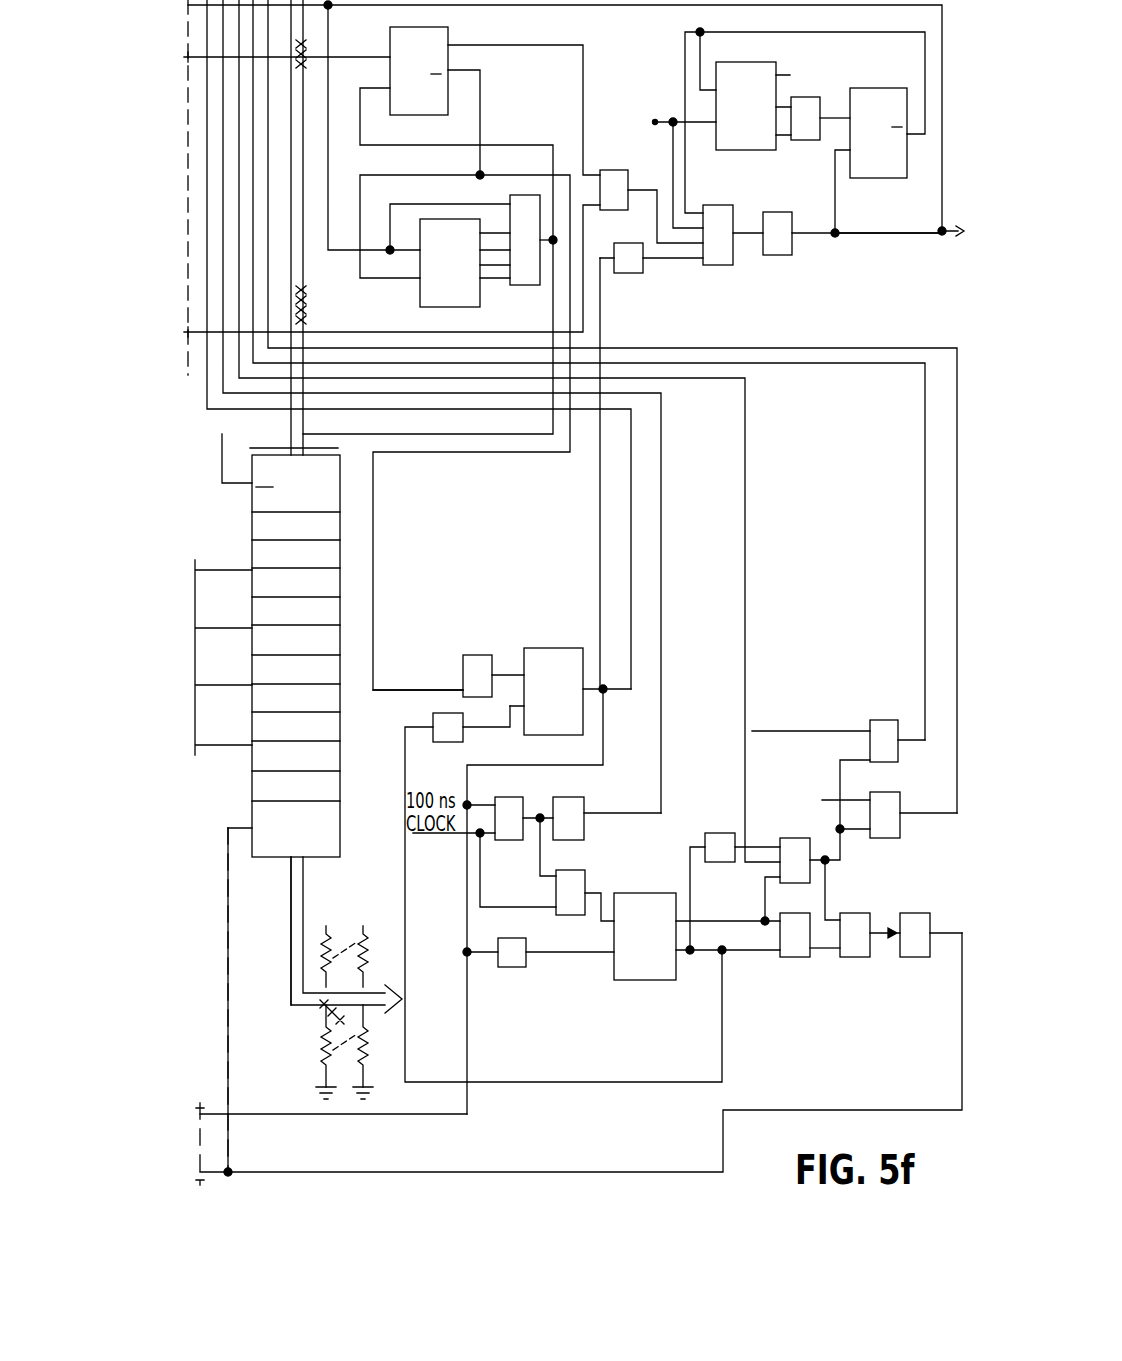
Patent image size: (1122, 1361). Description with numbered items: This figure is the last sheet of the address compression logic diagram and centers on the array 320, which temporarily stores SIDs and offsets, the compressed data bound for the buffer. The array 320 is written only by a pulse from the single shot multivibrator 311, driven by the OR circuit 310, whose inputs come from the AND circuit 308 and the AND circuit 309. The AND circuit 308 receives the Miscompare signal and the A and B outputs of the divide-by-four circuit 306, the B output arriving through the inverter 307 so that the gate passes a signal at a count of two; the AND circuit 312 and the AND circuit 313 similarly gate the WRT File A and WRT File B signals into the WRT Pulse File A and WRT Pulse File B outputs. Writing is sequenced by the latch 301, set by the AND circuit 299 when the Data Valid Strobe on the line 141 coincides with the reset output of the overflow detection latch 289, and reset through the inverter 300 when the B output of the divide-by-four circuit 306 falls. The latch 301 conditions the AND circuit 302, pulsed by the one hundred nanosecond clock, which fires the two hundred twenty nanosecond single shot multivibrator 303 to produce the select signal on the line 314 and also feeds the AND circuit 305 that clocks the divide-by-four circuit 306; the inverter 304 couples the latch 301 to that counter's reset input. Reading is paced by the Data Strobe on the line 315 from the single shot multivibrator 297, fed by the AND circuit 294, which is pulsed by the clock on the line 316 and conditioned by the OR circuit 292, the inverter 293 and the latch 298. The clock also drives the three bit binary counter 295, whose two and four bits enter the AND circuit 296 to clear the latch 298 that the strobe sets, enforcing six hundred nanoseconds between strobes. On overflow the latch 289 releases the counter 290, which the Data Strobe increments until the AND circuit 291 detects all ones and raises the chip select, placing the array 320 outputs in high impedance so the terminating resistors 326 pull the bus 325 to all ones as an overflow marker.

The line 141 is at (457, 660).
The latch 289 is at (448, 35).
The counter 290 is at (417, 293).
The AND circuit 291 is at (513, 287).
The OR circuit 292 is at (622, 169).
The inverter 293 is at (632, 274).
The AND circuit 294 is at (720, 266).
The 3 bit binary counter 295 is at (738, 62).
The AND circuit 296 is at (813, 97).
The single shot multivibrator 297 is at (782, 256).
The latch 298 is at (907, 91).
The AND circuit 299 is at (487, 659).
The inverter 300 is at (455, 744).
The latch 301 is at (572, 645).
The AND circuit 302 is at (519, 797).
The single shot multivibrator 303 is at (582, 797).
The inverter 304 is at (522, 944).
The AND circuit 305 is at (585, 873).
The divide by 4 circuit 306 is at (656, 982).
The inverter 307 is at (720, 864).
The AND circuit 308 is at (784, 839).
The AND circuit 309 is at (798, 958).
The OR circuit 310 is at (871, 910).
The single shot multivibrator 311 is at (933, 910).
The AND circuit 312 is at (900, 758).
The AND circuit 313 is at (891, 840).
The line 314 is at (643, 815).
The line 315 is at (890, 244).
The line 316 is at (648, 127).
The array 320 is at (340, 833).
The bus 325 is at (291, 940).
The terminating resistors 326 is at (367, 986).